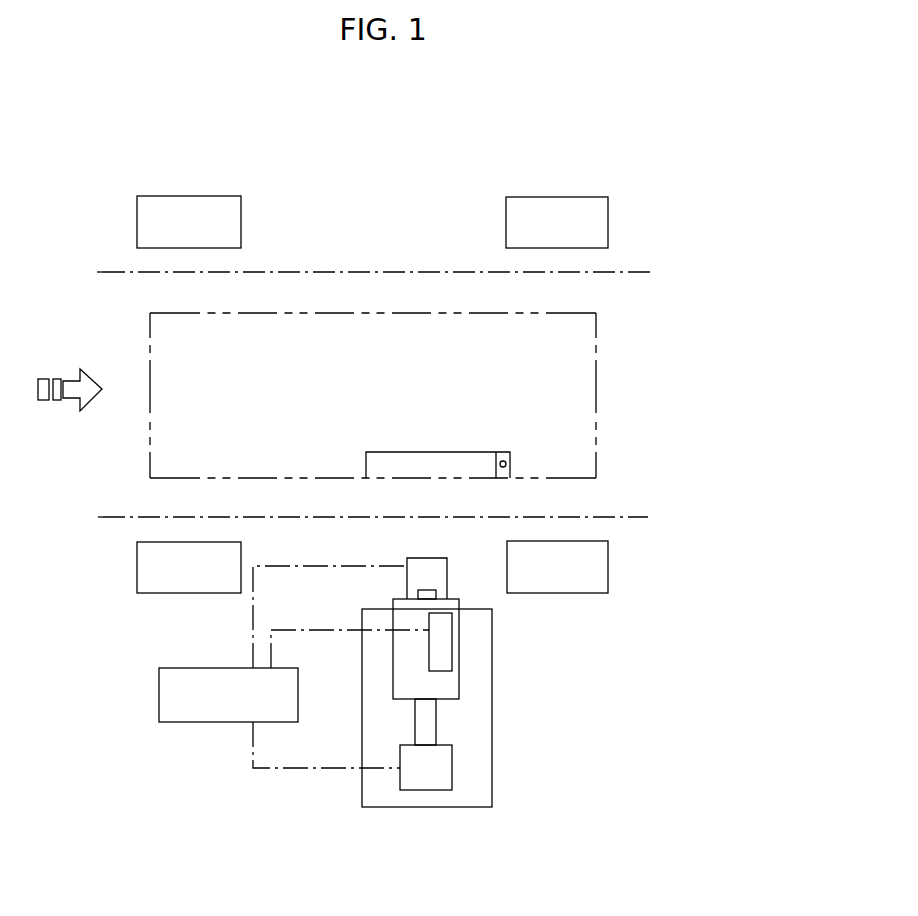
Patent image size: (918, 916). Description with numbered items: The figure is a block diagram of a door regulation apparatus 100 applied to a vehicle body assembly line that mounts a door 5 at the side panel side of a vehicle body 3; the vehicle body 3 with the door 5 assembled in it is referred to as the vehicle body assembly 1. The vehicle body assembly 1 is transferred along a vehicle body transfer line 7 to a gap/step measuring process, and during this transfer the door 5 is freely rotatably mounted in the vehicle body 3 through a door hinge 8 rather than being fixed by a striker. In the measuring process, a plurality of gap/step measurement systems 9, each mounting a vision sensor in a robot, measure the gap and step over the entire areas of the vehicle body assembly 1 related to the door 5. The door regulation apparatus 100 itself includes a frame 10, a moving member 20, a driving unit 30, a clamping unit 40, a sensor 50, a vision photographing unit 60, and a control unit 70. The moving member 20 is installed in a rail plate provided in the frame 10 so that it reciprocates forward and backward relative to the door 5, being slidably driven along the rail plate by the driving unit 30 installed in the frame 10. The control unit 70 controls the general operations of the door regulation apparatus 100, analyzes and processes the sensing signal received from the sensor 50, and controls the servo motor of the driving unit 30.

The door regulation apparatus 100 is at (360, 141).
The vehicle body assembly 1 is at (600, 343).
The vehicle body 3 is at (597, 402).
The door 5 is at (433, 452).
The vehicle body transfer line 7 is at (387, 272).
The door hinge 8 is at (504, 460).
The gap/step measurement system 9 is at (137, 222).
The frame 10 is at (465, 664).
The moving member 20 is at (459, 646).
The driving unit 30 is at (458, 732).
The clamping unit 40 is at (452, 583).
The sensor 50 is at (432, 590).
The vision photographing unit 60 is at (443, 674).
The control unit 70 is at (211, 722).